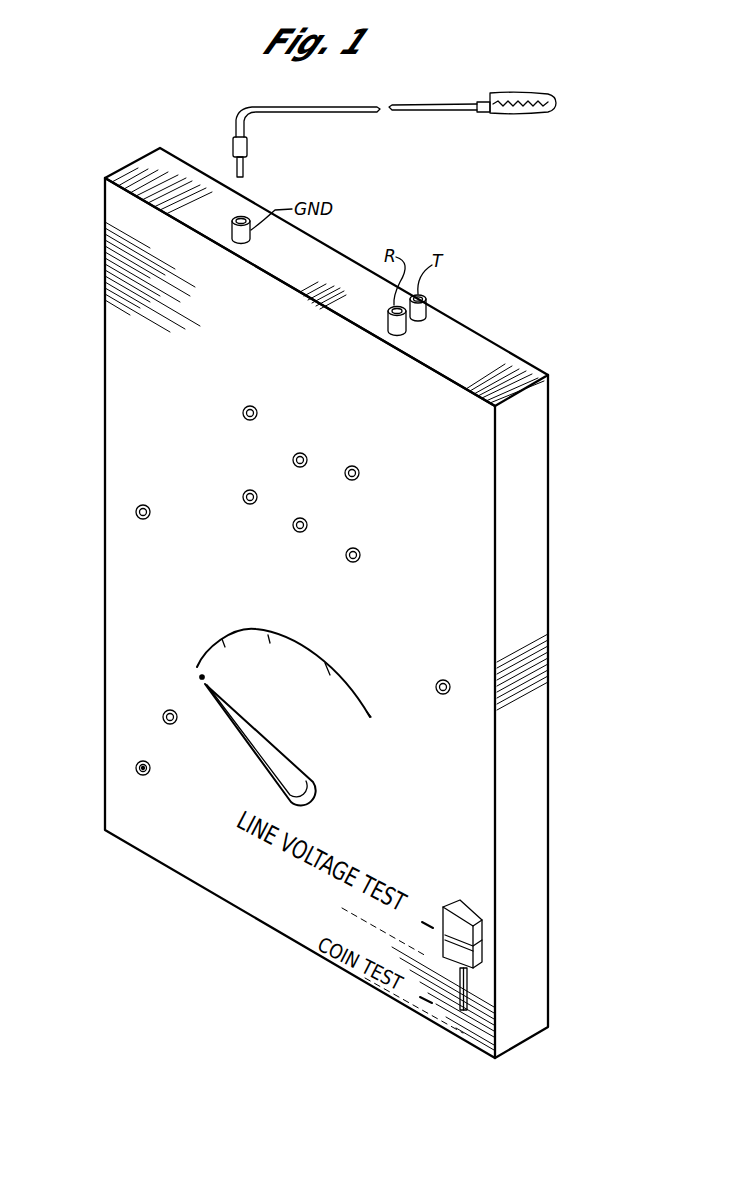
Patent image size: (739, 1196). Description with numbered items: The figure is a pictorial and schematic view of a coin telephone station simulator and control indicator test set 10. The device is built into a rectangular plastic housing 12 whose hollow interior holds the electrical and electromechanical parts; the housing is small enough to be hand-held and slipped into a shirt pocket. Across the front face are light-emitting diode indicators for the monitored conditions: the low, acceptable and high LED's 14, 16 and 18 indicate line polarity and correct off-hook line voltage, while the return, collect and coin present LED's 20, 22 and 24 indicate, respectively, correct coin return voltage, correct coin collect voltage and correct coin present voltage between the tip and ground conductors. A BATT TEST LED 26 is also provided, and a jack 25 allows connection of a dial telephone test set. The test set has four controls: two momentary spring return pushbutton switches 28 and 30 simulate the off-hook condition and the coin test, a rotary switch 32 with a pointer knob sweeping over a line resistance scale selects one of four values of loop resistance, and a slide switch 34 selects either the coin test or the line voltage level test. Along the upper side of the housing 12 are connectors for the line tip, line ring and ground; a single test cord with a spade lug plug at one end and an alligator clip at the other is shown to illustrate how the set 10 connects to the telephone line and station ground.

The coin telephone station simulator and control indicator test set 10 is at (78, 335).
The housing 12 is at (102, 402).
The low (LO) LED 14 is at (243, 420).
The acceptable (OK) LED 16 is at (309, 458).
The high (HI) LED 18 is at (360, 473).
The return LED 20 is at (252, 505).
The collect LED 22 is at (298, 532).
The coin present LED 24 is at (355, 563).
The jack 25 is at (147, 775).
The BATT TEST LED 26 is at (172, 725).
The momentary spring return pushbutton switch 28 is at (151, 512).
The momentary spring return pushbutton switch 30 is at (437, 684).
The rotary switch 32 is at (333, 762).
The slide switch 34 is at (468, 896).